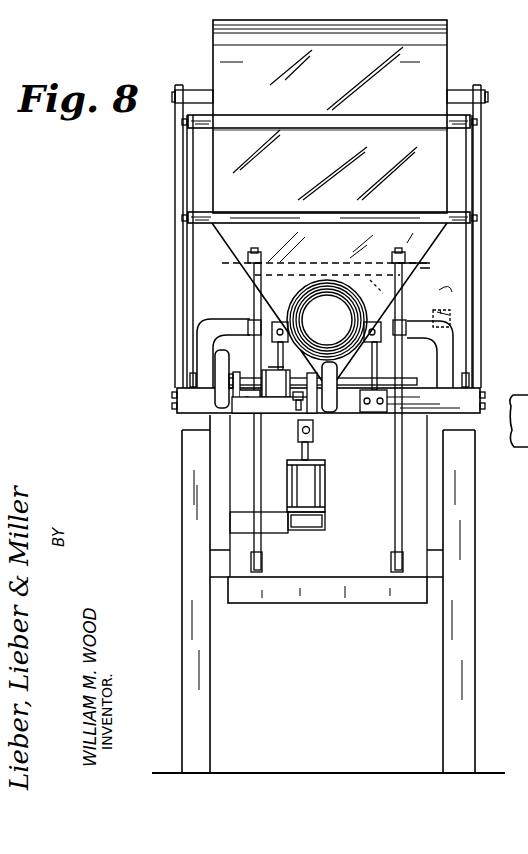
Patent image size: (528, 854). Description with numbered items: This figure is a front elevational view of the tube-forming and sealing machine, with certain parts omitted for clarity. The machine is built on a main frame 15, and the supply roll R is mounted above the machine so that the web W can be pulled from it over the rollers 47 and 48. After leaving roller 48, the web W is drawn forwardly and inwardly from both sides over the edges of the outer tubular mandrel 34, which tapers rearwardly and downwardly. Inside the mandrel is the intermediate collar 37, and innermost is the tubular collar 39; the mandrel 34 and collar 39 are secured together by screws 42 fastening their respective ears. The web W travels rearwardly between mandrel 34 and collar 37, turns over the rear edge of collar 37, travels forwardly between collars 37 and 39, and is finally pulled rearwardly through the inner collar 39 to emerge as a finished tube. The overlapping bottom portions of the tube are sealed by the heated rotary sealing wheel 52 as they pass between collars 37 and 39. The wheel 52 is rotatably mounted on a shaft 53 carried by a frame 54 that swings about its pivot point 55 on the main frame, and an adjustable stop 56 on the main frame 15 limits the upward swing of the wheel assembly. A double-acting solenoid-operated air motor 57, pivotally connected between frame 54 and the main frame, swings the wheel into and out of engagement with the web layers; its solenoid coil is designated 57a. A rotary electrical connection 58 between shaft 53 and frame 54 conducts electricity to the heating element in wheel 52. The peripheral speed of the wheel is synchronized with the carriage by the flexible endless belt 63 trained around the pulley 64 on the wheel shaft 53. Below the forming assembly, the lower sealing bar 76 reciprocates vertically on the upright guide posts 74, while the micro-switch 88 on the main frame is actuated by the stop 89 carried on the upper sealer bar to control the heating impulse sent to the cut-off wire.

The supply roll R is at (428, 65).
The web W is at (228, 180).
The main frame 15 is at (192, 538).
The roller 47 is at (476, 122).
The roller 48 is at (462, 217).
The outer tubular mandrel 34 is at (295, 293).
The collar 37 is at (315, 292).
The tubular collar 39 is at (327, 294).
The screws 42 is at (441, 285).
The heated rotary sealing wheel 52 is at (332, 412).
The shaft 53 is at (250, 380).
The frame 54 is at (272, 417).
The pivot point 55 is at (245, 398).
The adjustable stop 56 is at (310, 413).
The double-acting solenoid-operated air motor 57 is at (310, 482).
The air motor solenoid coil 57a is at (312, 523).
The rotary electrical connection 58 is at (265, 402).
The flexible endless belt 63 is at (218, 368).
The pulley 64 is at (217, 357).
The upright guide posts 74 is at (261, 543).
The lower sealing bar 76 is at (380, 373).
The micro-switch 88 is at (443, 308).
The stop 89 is at (417, 277).